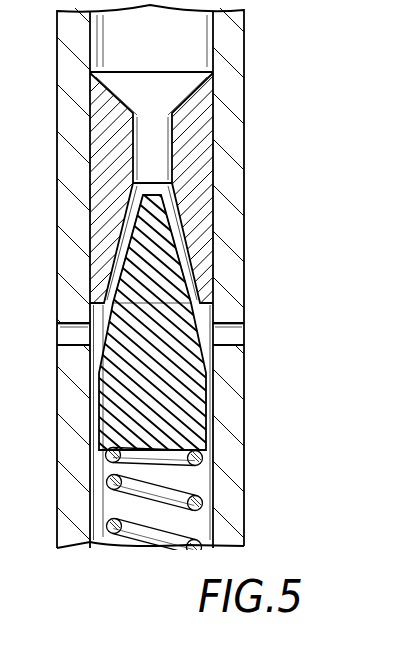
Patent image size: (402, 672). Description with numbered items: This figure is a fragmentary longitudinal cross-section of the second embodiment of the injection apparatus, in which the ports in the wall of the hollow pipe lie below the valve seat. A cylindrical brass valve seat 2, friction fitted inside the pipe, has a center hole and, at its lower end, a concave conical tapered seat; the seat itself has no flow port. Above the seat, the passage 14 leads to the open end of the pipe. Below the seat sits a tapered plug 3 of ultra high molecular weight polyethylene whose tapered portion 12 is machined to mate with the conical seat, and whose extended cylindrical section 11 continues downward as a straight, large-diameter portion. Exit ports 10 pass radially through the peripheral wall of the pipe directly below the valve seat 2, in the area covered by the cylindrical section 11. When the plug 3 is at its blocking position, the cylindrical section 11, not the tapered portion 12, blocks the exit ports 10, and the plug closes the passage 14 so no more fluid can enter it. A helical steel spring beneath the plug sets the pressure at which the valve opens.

The passage 14 is at (192, 43).
The valve seat 2 is at (193, 146).
The tapered portion 12 is at (158, 262).
The exit port 10 is at (236, 335).
The plug 3 is at (200, 346).
The extended cylindrical section 11 is at (209, 412).